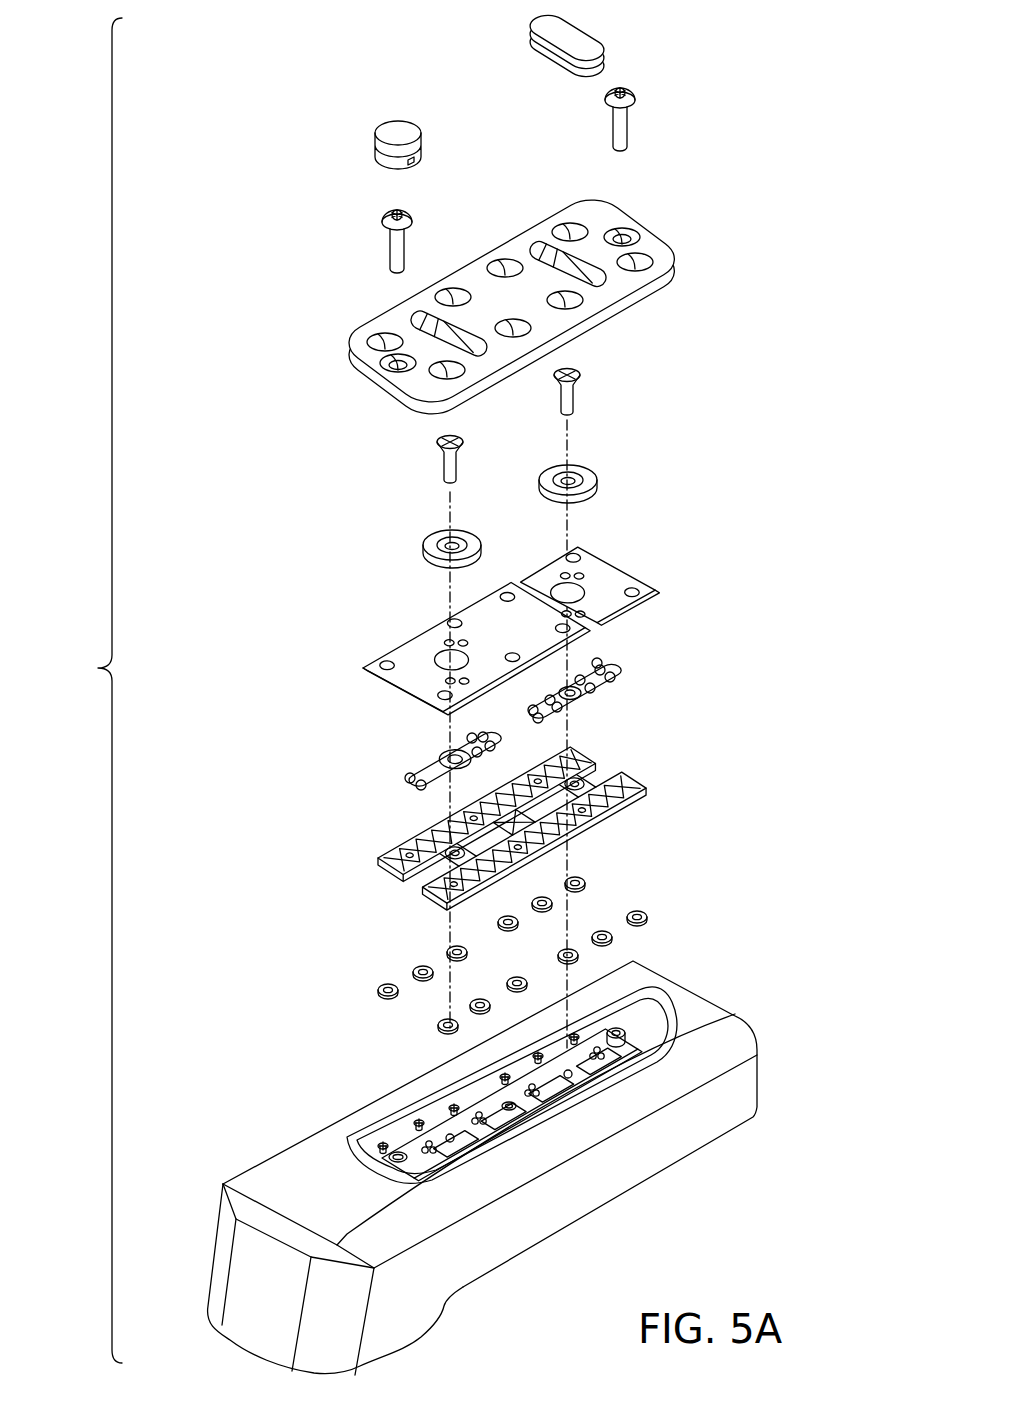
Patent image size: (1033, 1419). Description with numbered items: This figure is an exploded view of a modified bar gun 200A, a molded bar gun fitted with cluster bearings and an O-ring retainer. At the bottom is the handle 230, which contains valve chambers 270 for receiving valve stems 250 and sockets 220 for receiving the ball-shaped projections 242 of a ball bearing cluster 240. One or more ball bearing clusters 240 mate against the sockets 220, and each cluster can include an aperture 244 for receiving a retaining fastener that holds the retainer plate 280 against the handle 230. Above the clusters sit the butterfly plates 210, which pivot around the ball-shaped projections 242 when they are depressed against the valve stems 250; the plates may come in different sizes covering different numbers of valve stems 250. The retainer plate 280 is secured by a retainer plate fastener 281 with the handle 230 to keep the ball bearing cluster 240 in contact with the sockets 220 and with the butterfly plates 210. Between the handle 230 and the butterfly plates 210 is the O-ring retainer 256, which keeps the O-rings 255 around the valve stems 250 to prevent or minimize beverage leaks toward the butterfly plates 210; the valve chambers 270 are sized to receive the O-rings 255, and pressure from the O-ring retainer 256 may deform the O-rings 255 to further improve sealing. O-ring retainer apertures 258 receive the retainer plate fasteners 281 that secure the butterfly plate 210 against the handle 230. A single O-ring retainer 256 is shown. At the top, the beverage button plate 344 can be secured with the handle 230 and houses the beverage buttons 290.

The modified bar gun 200A is at (76, 690).
The beverage buttons 290 is at (580, 45).
The beverage button plate 344 is at (663, 248).
The retainer plate fastener 281 is at (556, 390).
The retainer plate 280 is at (415, 554).
The butterfly plates 210 is at (628, 578).
The ball bearing cluster 240 is at (606, 666).
The ball-shaped projections 242 is at (616, 680).
The aperture 244 is at (578, 700).
The O-ring retainer 256 is at (629, 816).
The O-ring retainer apertures 258 is at (430, 858).
The O-rings 255 is at (659, 927).
The handle 230 is at (791, 1050).
The sockets 220 is at (514, 1120).
The valve stems 250 is at (414, 1110).
The valve chambers 270 is at (406, 1124).